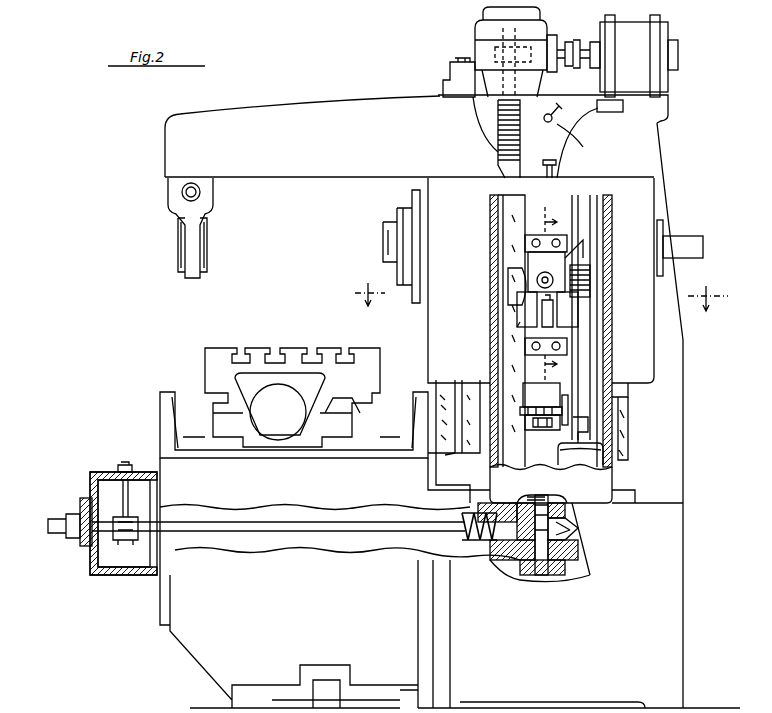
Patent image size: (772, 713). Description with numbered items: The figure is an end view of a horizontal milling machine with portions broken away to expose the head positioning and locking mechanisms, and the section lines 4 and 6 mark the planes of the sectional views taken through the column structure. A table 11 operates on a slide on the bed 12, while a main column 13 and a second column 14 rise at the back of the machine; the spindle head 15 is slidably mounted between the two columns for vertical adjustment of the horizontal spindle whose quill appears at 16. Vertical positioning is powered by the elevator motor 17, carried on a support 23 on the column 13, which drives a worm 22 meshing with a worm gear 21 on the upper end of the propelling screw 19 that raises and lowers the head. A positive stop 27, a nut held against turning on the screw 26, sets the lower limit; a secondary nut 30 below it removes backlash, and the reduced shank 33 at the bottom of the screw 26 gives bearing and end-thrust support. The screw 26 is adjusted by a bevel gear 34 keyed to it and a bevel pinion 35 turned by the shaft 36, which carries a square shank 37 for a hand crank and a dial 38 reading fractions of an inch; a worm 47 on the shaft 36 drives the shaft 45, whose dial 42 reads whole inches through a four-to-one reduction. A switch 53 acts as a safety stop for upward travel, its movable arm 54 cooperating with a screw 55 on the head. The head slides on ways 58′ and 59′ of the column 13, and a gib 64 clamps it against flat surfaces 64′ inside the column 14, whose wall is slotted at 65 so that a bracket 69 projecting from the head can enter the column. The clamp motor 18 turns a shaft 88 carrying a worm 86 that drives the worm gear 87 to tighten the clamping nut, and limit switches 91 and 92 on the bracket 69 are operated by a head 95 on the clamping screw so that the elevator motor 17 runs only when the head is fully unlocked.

The section line 4- 4 is at (358, 292).
The section line 6- 6 is at (544, 292).
The table 11 is at (214, 348).
The bed 12 is at (173, 598).
The main column 13 is at (683, 325).
The second column 14 is at (522, 310).
The spindle head 15 is at (428, 340).
The quill 16 is at (388, 220).
The elevator motor 17 is at (640, 43).
The clamp motor 18 is at (575, 455).
The propelling screw 19 is at (520, 142).
The worm gear 21 is at (481, 55).
The worm 22 is at (490, 70).
The support 23 is at (668, 104).
The screw 26 is at (545, 495).
The positive stop 27 is at (545, 404).
The secondary nut 30 is at (528, 418).
The reduced shank 33 is at (541, 575).
The bevel gear 34 is at (578, 528).
The bevel pinion 35 is at (515, 560).
The shaft 36 is at (405, 532).
The square shank 37 is at (55, 535).
The dial 38 is at (82, 546).
The second dial 42 is at (118, 462).
The shaft 45 is at (112, 498).
The worm 47 is at (125, 542).
The switch 53 is at (575, 118).
The movable arm 54 is at (579, 138).
The screw 55 is at (560, 165).
The way 58′ is at (458, 453).
The way 59′ is at (624, 462).
The third gib 64 is at (500, 278).
The flat surfaces 64′ is at (505, 222).
The slot 65 is at (500, 205).
The bracket 69 is at (565, 258).
The worm 86 is at (590, 280).
The worm gear 87 is at (517, 285).
The shaft 88 is at (585, 222).
The limit switch 91 is at (575, 320).
The limit switch 92 is at (520, 322).
The head 95 is at (545, 272).